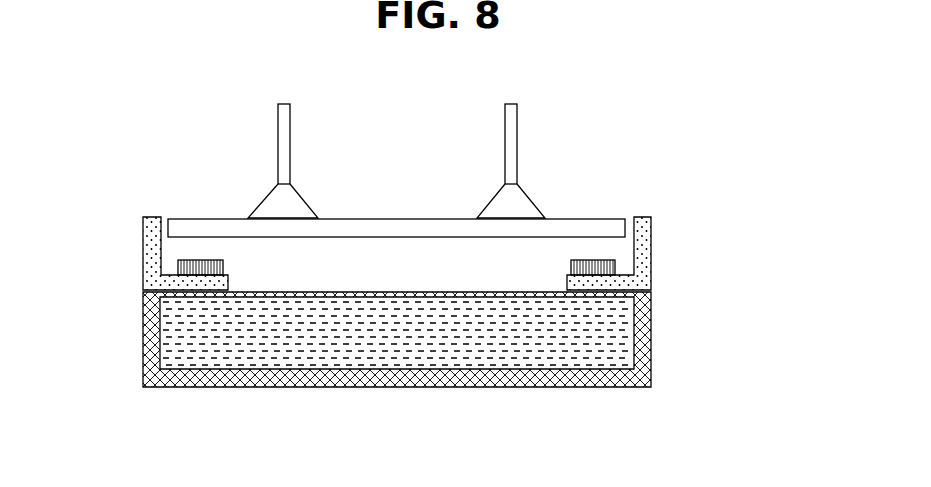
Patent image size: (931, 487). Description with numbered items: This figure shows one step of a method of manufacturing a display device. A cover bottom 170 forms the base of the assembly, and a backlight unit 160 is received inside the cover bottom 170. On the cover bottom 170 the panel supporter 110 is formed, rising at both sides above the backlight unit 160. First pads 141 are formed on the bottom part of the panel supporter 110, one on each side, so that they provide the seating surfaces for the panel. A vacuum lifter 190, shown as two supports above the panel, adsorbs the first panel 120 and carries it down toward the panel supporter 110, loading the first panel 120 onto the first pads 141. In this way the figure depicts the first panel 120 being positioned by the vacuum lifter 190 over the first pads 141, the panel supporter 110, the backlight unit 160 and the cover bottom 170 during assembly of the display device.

The panel supporter 110 is at (648, 242).
The first panel 120 is at (598, 228).
The first pads 141 is at (200, 258).
The backlight unit 160 is at (494, 352).
The cover bottom 170 is at (651, 330).
The vacuum lifter 190 is at (291, 130).